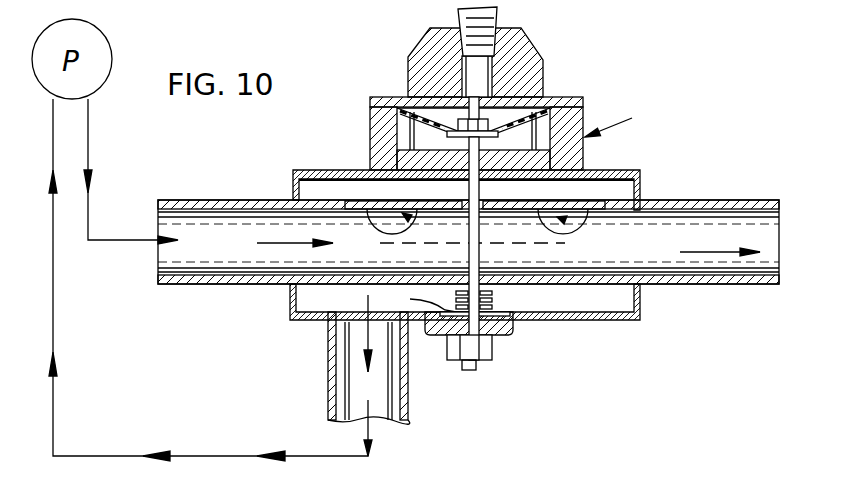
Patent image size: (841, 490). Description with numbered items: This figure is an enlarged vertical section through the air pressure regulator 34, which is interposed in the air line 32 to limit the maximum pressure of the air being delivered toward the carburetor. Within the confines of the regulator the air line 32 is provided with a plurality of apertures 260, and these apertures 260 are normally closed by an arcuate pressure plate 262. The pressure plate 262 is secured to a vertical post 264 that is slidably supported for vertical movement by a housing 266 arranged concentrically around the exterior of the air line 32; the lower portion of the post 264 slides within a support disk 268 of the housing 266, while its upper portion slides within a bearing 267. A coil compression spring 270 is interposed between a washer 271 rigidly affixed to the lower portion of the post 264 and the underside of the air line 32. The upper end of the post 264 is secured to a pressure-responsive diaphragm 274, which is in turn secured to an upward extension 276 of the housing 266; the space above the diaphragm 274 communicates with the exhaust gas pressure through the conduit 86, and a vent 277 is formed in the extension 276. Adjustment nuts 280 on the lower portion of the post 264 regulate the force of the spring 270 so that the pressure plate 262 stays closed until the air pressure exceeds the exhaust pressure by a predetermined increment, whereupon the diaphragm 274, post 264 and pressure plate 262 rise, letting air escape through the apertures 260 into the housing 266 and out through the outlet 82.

The air line 32 is at (243, 200).
The air pressure regulator 34 is at (617, 119).
The outlet 82 is at (405, 405).
The conduit 86 is at (497, 18).
The apertures 260 is at (385, 217).
The arcuate pressure plate 262 is at (580, 206).
The vertical post 264 is at (479, 157).
The housing 266 is at (297, 171).
The bearing 267 is at (578, 124).
The support disk 268 is at (510, 334).
The coil compression spring 270 is at (483, 306).
The washer 271 is at (447, 310).
The pressure-responsive diaphragm 274 is at (548, 108).
The upward extension 276 is at (584, 160).
The vent 277 is at (372, 138).
The adjustment nuts 280 is at (488, 356).